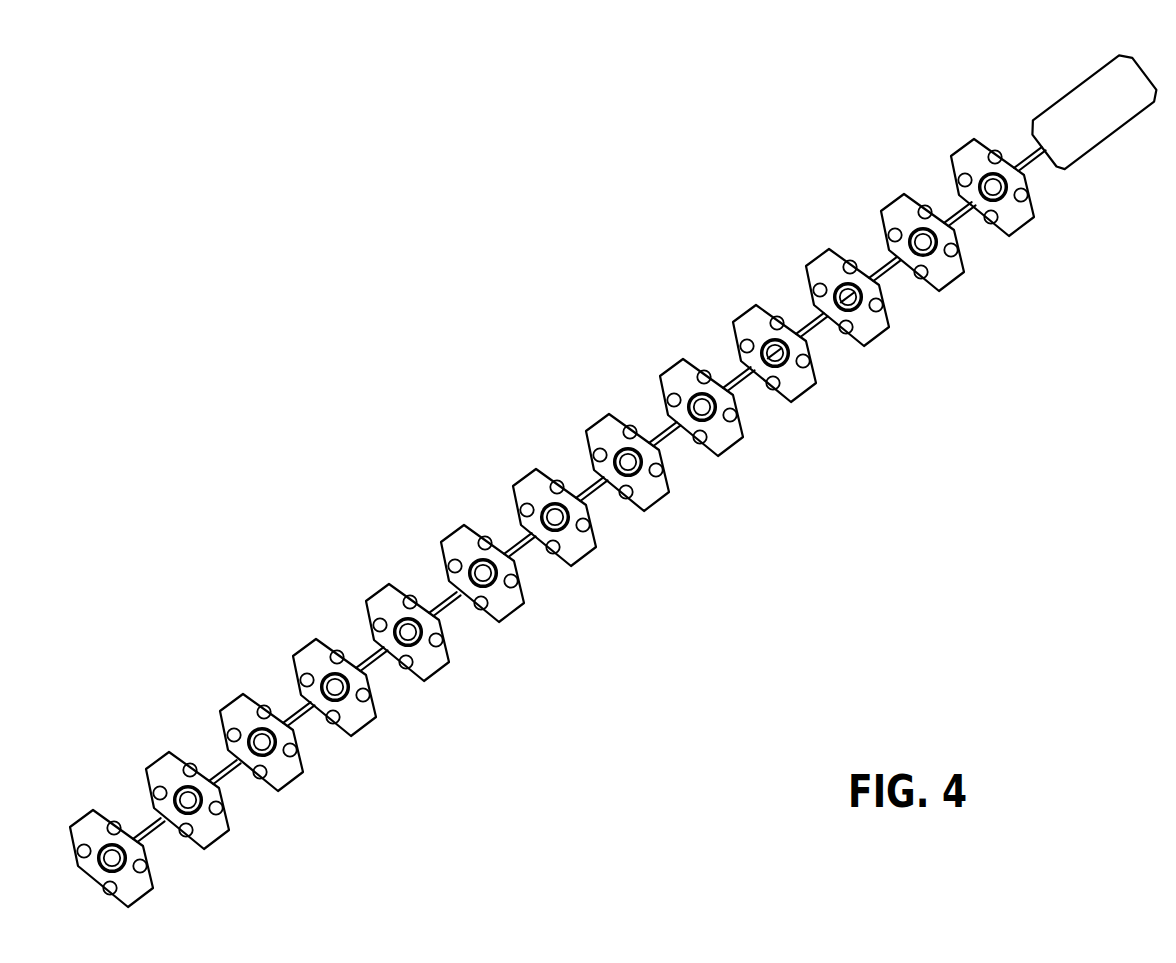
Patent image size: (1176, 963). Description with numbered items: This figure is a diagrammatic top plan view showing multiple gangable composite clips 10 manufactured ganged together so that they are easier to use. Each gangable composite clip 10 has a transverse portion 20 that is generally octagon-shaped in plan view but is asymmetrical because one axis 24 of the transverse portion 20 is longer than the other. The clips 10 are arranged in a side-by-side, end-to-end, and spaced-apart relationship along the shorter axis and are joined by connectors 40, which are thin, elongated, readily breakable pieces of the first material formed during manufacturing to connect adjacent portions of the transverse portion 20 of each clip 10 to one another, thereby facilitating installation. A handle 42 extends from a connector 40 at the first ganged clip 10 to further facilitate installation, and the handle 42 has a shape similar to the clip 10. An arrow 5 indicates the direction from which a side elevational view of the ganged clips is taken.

The arrow 5 is at (702, 510).
The gangable composite clip 10 is at (720, 275).
The transverse portion 20 is at (798, 393).
The axis 24 is at (832, 327).
The connector 40 is at (808, 324).
The handle 42 is at (1062, 105).